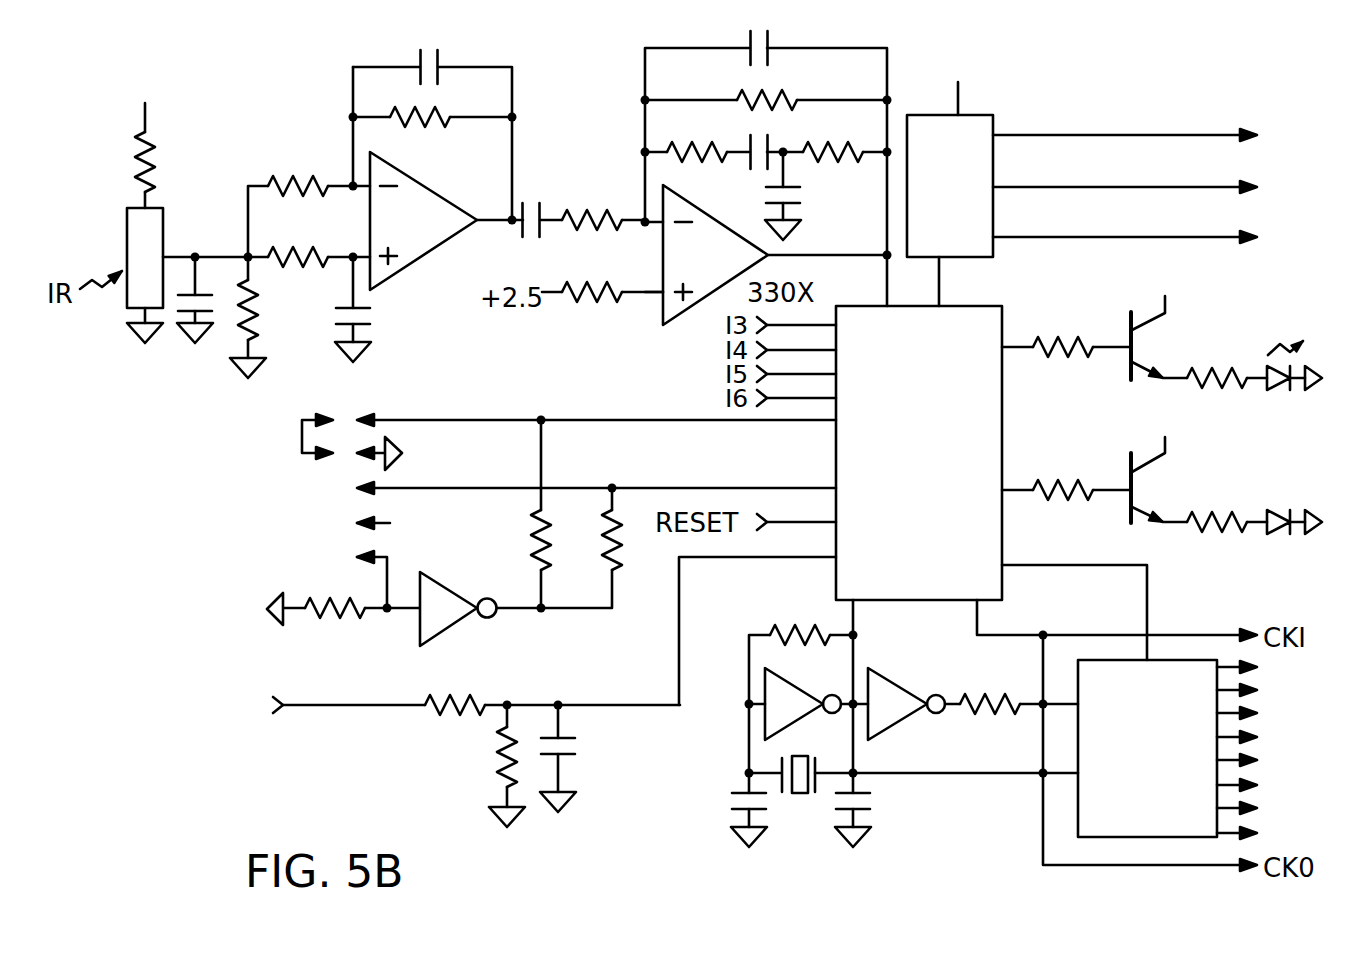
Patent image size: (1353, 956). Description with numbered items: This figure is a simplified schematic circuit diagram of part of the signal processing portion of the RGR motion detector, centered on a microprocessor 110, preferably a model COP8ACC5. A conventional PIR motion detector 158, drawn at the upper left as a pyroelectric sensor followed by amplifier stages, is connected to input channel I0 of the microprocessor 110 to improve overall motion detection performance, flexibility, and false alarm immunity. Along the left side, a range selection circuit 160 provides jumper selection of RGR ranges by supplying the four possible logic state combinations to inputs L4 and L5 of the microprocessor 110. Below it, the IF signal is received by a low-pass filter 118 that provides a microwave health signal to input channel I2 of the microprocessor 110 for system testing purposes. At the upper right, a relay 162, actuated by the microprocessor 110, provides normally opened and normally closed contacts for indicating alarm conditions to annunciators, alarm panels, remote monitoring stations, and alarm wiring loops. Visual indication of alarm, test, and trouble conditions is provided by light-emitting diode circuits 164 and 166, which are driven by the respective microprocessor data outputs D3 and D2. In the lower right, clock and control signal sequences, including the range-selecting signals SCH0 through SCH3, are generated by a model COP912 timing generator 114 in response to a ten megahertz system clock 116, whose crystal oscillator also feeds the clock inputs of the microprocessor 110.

The PIR motion detector 158 is at (255, 130).
The relay 162 is at (975, 130).
The light-emitting diode circuit 164 is at (1190, 322).
The light-emitting diode circuit 166 is at (1168, 480).
The microprocessor 110 is at (987, 518).
The range selection circuit 160 is at (282, 562).
The low-pass filter 118 is at (448, 748).
The system clock 116 is at (800, 812).
The timing generator 114 is at (1185, 687).